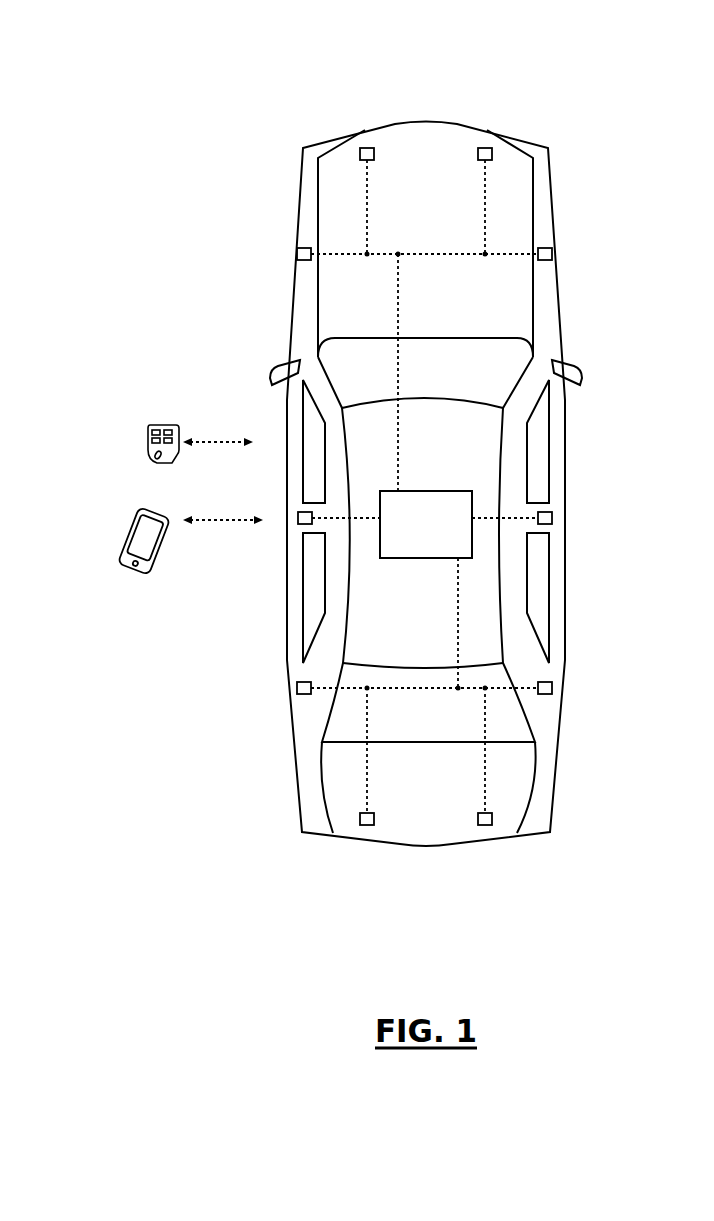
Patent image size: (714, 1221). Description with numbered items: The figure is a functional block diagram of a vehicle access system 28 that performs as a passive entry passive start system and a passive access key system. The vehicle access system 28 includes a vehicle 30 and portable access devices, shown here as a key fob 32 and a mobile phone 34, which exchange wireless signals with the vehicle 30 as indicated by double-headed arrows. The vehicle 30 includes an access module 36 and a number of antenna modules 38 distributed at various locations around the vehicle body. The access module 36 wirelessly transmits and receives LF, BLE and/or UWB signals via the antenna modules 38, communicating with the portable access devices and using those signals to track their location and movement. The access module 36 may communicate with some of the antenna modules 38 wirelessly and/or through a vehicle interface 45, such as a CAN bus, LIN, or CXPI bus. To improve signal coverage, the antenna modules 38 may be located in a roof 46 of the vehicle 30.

The vehicle access system 28 is at (130, 103).
The vehicle 30 is at (555, 180).
The key fob 32 is at (147, 443).
The mobile phone 34 is at (130, 513).
The access module 36 is at (437, 491).
The antenna modules 38 is at (367, 148).
The vehicle interface 45 is at (398, 315).
The roof 46 is at (500, 567).